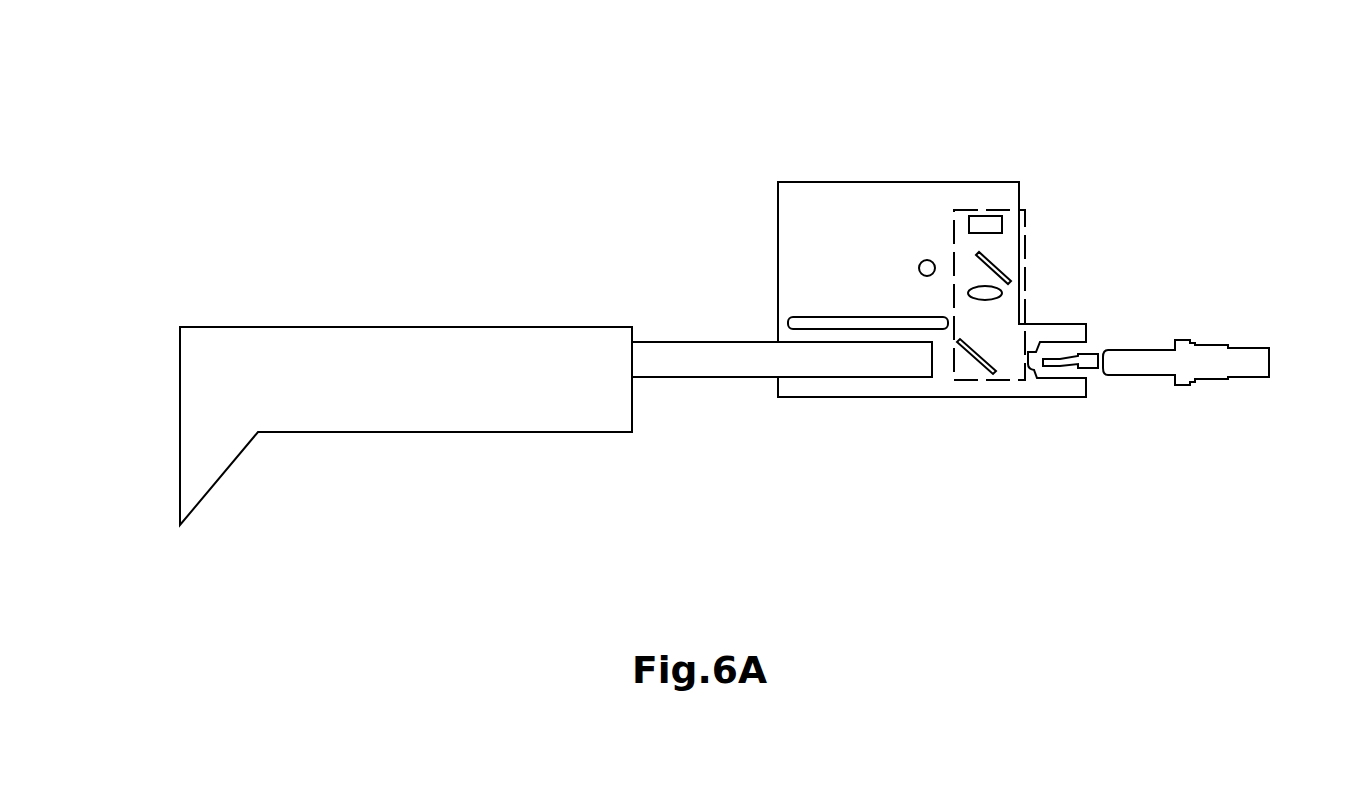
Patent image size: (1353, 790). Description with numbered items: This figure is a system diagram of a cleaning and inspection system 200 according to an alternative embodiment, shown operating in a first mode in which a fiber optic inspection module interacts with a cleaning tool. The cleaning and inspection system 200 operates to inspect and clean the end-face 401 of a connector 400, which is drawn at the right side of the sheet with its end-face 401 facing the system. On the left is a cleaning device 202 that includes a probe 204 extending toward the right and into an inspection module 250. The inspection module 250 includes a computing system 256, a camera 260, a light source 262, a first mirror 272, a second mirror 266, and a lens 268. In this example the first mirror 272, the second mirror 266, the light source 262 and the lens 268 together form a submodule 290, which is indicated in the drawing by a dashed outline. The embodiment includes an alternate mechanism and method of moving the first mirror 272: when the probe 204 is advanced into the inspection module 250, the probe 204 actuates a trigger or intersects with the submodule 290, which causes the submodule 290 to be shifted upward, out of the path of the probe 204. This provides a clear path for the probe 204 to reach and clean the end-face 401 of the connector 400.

The cleaning and inspection system 200 is at (1035, 140).
The cleaning device 202 is at (508, 312).
The probe 204 is at (703, 378).
The inspection module 250 is at (800, 200).
The computing system 256 is at (798, 322).
The camera 260 is at (927, 260).
The light source 262 is at (1003, 222).
The second mirror 266 is at (1000, 267).
The lens 268 is at (1000, 293).
The first mirror 272 is at (982, 368).
The submodule 290 is at (988, 210).
The connector 400 is at (1247, 378).
The end-face 401 is at (1048, 367).